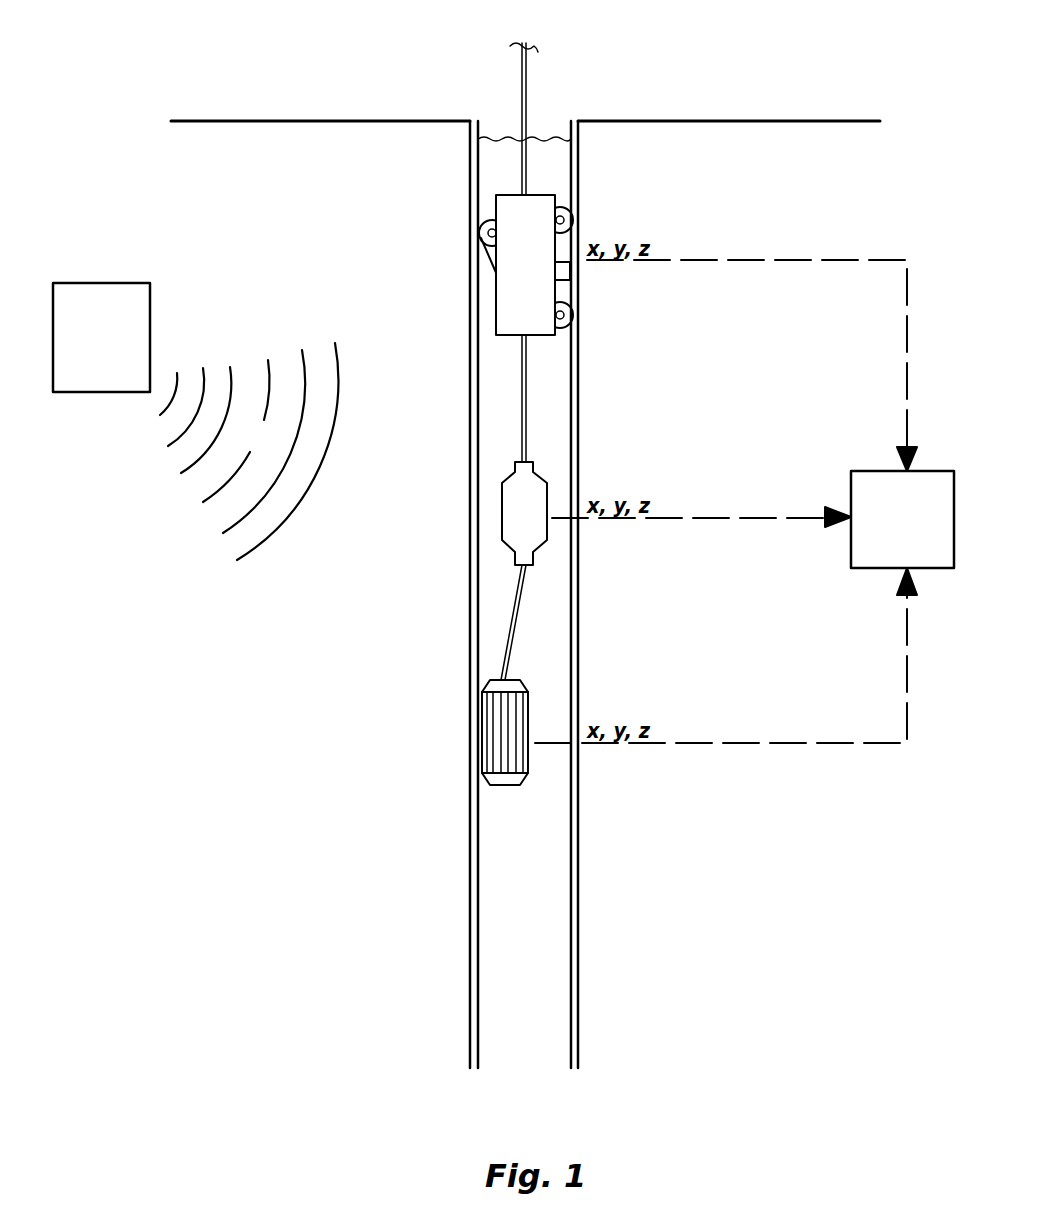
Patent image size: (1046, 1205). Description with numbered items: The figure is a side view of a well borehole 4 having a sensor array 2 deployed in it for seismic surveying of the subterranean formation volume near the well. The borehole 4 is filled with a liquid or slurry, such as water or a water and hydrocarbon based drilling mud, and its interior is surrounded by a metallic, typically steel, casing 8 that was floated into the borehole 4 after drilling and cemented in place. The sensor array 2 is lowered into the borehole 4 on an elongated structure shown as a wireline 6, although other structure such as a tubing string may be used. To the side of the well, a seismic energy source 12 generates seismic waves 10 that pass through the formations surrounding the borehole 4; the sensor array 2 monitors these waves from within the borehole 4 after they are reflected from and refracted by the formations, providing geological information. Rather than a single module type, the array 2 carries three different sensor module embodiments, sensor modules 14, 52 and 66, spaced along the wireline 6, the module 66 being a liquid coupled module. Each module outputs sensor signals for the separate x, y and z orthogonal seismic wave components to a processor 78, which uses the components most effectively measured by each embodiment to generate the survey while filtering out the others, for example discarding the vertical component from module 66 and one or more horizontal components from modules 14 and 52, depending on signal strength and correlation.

The sensor array 2 is at (508, 402).
The well borehole 4 is at (531, 922).
The wireline 6 is at (527, 107).
The casing 8 is at (470, 875).
The seismic waves 10 is at (262, 448).
The seismic energy source 12 is at (116, 350).
The sensor module 14 is at (537, 278).
The sensor module 52 is at (525, 708).
The sensor module 66 is at (515, 512).
The processor 78 is at (918, 534).